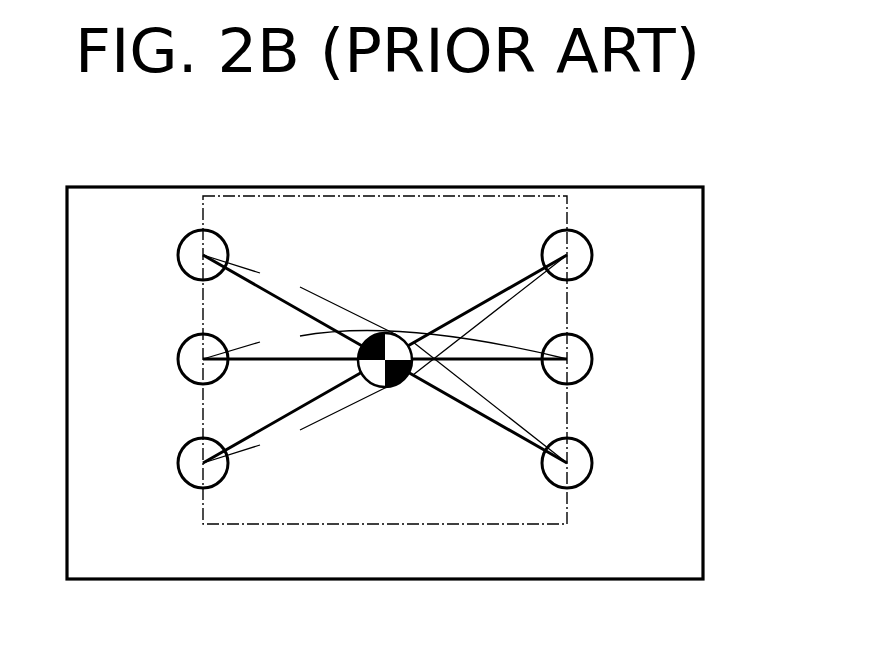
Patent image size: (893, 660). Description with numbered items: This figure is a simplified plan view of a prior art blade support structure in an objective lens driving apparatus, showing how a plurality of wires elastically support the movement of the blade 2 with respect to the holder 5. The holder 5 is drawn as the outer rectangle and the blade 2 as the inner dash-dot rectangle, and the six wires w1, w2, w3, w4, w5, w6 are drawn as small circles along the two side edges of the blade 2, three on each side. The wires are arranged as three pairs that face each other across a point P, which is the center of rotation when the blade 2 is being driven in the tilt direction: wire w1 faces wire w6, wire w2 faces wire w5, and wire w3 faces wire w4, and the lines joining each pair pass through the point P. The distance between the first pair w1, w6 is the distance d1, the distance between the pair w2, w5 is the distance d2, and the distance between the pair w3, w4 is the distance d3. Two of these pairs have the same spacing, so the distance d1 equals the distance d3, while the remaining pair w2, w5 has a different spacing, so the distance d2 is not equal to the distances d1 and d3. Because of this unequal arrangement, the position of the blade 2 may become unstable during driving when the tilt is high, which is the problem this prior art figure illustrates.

The blade 2 is at (405, 524).
The holder 5 is at (703, 403).
The point P is at (395, 333).
The wire w1 is at (591, 254).
The wire w2 is at (591, 358).
The wire w3 is at (591, 462).
The wire w4 is at (178, 253).
The wire w5 is at (178, 357).
The wire w6 is at (178, 461).
The distance d1 is at (300, 422).
The distance d2 is at (385, 344).
The distance d3 is at (300, 295).